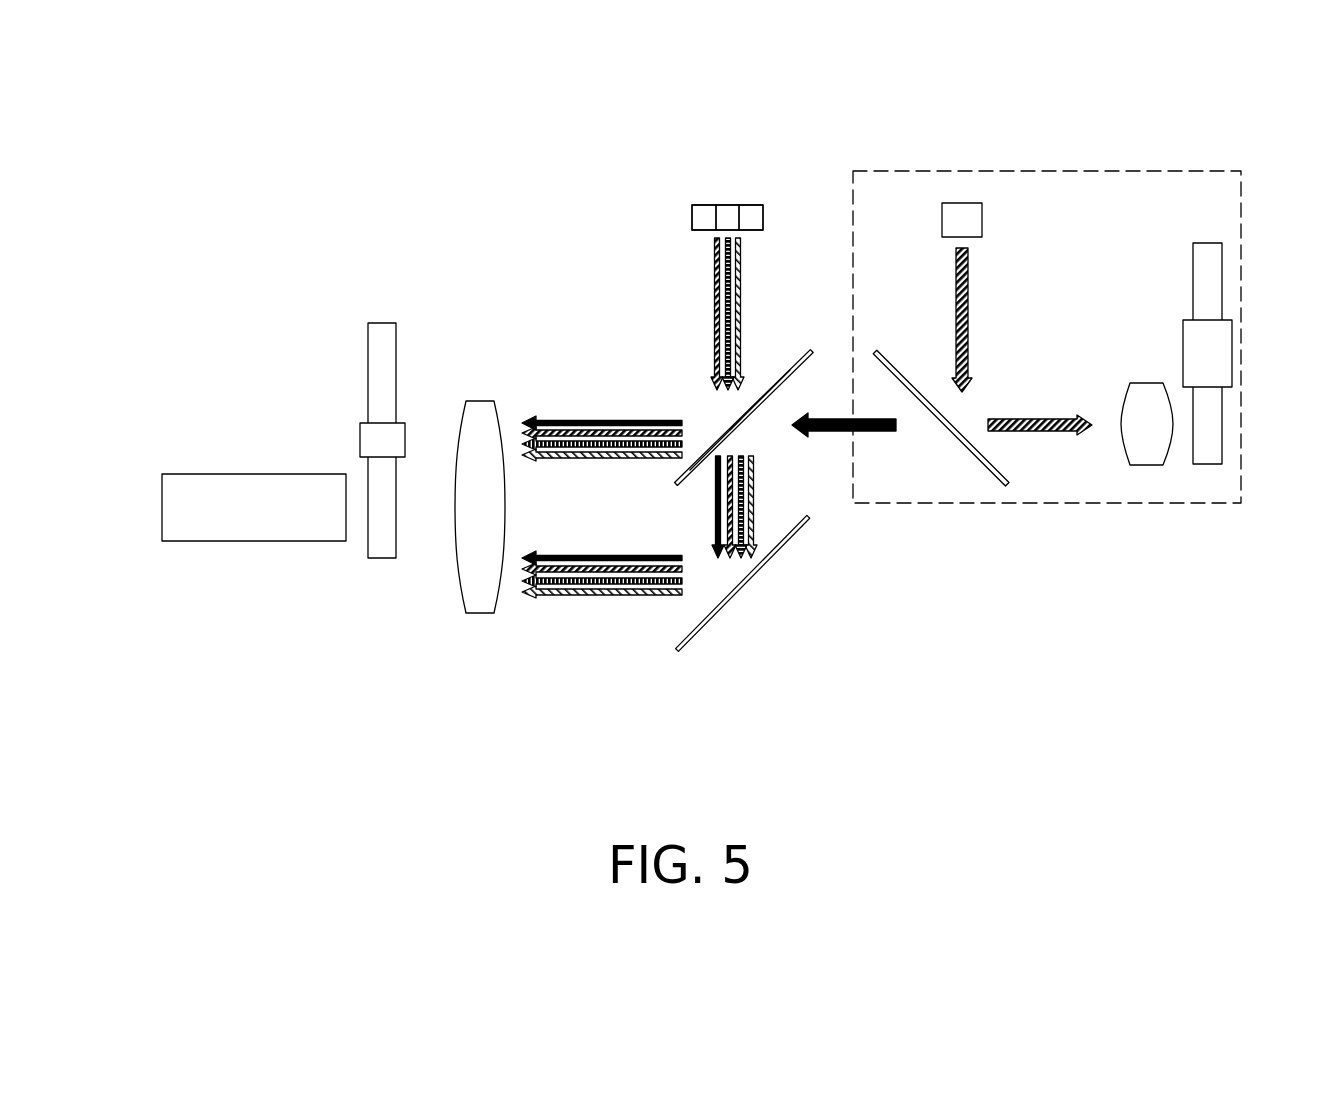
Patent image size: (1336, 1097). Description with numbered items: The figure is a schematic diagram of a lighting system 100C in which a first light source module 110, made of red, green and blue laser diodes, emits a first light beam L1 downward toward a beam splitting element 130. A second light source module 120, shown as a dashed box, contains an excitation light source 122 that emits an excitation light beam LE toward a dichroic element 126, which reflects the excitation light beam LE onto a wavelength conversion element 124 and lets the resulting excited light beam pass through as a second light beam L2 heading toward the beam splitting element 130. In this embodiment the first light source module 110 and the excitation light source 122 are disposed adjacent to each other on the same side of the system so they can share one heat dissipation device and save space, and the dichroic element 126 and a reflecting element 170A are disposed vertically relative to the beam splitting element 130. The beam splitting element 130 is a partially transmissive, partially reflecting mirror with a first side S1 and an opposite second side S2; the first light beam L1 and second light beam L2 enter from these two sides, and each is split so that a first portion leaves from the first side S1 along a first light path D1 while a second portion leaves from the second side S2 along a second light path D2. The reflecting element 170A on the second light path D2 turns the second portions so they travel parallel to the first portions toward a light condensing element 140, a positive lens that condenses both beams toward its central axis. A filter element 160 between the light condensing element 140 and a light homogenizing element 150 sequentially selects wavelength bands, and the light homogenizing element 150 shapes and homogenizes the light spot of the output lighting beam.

The lighting system 100C is at (1307, 764).
The first light source module 110 is at (862, 56).
The second light source module 120 is at (1068, 170).
The excitation light source 122 is at (968, 212).
The wavelength conversion element 124 is at (1208, 247).
The dichroic element 126 is at (982, 465).
The beam splitting element 130 is at (804, 354).
The light condensing element 140 is at (480, 613).
The light homogenizing element 150 is at (249, 541).
The filter element 160 is at (382, 550).
The reflecting element 170A is at (775, 560).
The first light beam L1 is at (714, 303).
The second light beam L2 is at (873, 432).
The excitation light beam LE is at (968, 292).
The first side S1 is at (718, 432).
The second side S2 is at (757, 413).
The first light path D1 is at (573, 419).
The second light path D2 is at (572, 597).